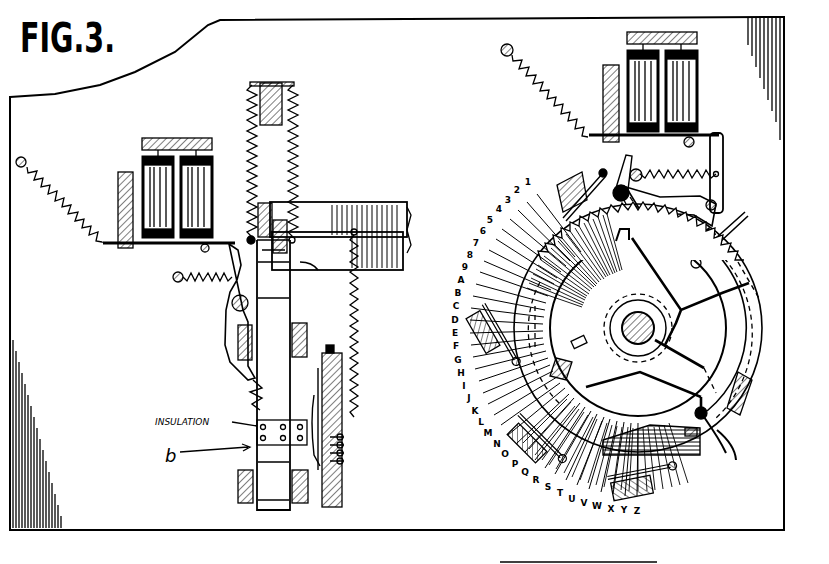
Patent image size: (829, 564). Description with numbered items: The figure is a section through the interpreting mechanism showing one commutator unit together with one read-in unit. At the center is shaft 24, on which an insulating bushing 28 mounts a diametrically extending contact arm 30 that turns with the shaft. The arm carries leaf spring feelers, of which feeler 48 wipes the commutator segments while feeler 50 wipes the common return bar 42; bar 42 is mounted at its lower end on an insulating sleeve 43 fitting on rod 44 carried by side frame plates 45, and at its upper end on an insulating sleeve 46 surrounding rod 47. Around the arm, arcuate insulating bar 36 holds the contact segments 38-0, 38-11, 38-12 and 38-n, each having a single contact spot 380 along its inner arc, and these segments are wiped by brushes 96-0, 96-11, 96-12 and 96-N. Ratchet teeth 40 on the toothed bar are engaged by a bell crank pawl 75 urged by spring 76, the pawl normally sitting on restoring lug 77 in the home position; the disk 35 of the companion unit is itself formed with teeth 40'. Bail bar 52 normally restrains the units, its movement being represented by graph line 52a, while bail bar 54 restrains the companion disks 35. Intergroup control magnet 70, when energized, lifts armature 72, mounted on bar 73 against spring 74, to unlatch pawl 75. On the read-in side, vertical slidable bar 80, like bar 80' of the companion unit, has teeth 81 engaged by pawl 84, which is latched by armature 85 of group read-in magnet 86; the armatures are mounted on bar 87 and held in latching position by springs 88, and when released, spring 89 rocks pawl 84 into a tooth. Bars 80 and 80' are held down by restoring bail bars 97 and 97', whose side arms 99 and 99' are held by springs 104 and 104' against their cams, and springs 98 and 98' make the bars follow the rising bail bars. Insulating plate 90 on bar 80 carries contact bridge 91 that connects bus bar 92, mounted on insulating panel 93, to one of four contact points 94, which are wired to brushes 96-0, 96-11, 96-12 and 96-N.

The springs 88 is at (56, 193).
The bar 87 is at (118, 206).
The group read-in magnet 86 is at (212, 201).
The armature 85 is at (154, 246).
The spring 89 is at (193, 287).
The pawl 84 is at (232, 356).
The springs 98' is at (251, 163).
The springs 98 is at (294, 163).
The restoring bail bar 97' is at (274, 206).
The restoring bail bar 97 is at (322, 279).
The side arm 99' is at (340, 214).
The spring 104' is at (349, 223).
The spring 104 is at (375, 323).
The side arm 99 is at (399, 297).
The bar 80' is at (291, 278).
The bar 80 is at (260, 375).
The teeth 81 is at (252, 394).
The insulating panel 93 is at (343, 497).
The bus bar 92 is at (324, 378).
The contact bridge 91 is at (314, 398).
The contact points 94 is at (344, 461).
The insulating plate 90 is at (257, 437).
The springs 74 is at (522, 55).
The bar 73 is at (603, 93).
The intergroup control magnet 70 is at (700, 99).
The armature 72 is at (660, 137).
The bell crank pawl 75 is at (722, 185).
The spring 76 is at (665, 176).
The rod 47 is at (645, 166).
The ratchet teeth 40 is at (631, 193).
The insulating sleeve 46 is at (634, 190).
The restoring lugs 77 is at (718, 208).
The teeth 40' is at (738, 215).
The bail bar 52 is at (722, 235).
The leaf spring feeler 50 is at (701, 262).
The graph line 52a is at (742, 290).
The bail bar 54 is at (742, 415).
The disk 35 is at (610, 272).
The bushing 28 is at (625, 325).
The commutator contact segment 38-n is at (574, 260).
The commutator contact segment 38-11 is at (625, 408).
The contact arm 30 is at (688, 308).
The shaft 24 is at (650, 341).
The rod 44 is at (702, 406).
The common return ring section 42 is at (706, 420).
The insulating sleeve 43 is at (707, 434).
The arcuate bar 36 is at (704, 460).
The commutator contact segment 38-0 is at (634, 417).
The leaf spring feeler 48 is at (577, 378).
The commutator contact segment 38-12 is at (550, 336).
The contact spot 380 is at (575, 348).
The brush 96-N is at (558, 197).
The brush 96-12 is at (442, 271).
The brush 96-11 is at (532, 412).
The brush 96-0 is at (623, 458).
The side frame plates 45 is at (476, 512).